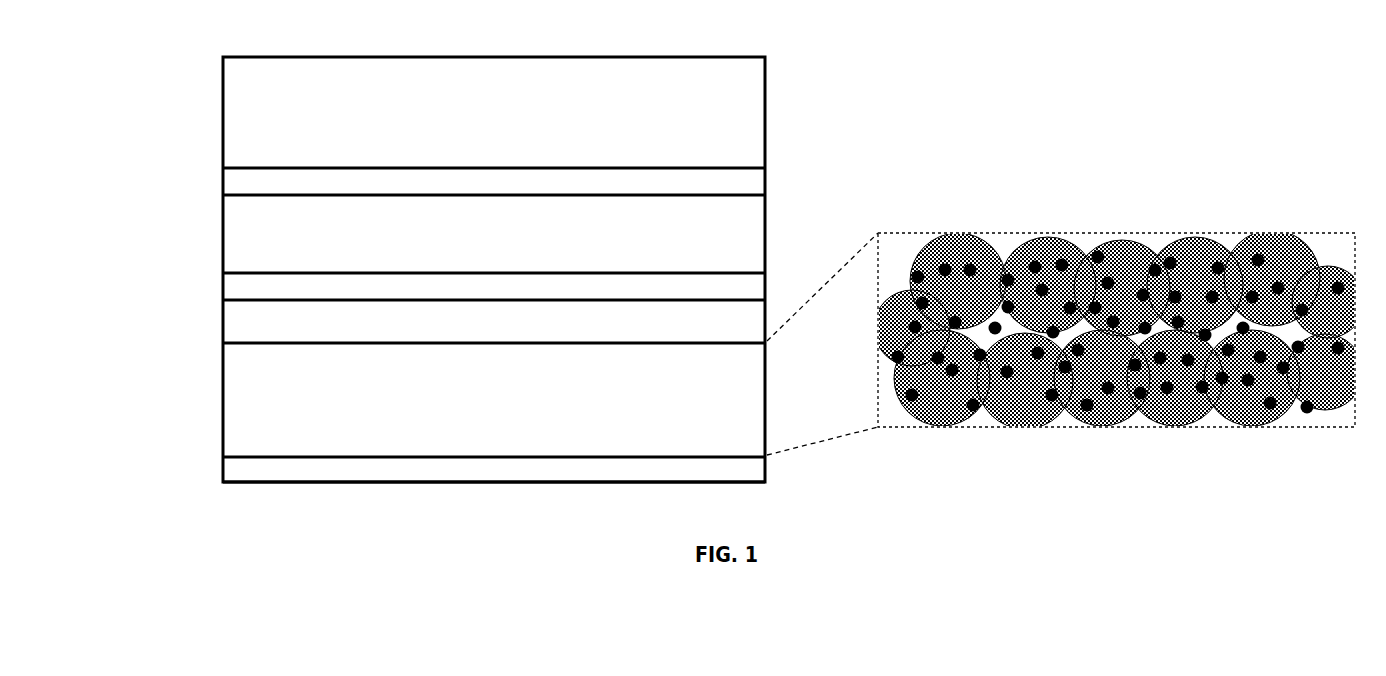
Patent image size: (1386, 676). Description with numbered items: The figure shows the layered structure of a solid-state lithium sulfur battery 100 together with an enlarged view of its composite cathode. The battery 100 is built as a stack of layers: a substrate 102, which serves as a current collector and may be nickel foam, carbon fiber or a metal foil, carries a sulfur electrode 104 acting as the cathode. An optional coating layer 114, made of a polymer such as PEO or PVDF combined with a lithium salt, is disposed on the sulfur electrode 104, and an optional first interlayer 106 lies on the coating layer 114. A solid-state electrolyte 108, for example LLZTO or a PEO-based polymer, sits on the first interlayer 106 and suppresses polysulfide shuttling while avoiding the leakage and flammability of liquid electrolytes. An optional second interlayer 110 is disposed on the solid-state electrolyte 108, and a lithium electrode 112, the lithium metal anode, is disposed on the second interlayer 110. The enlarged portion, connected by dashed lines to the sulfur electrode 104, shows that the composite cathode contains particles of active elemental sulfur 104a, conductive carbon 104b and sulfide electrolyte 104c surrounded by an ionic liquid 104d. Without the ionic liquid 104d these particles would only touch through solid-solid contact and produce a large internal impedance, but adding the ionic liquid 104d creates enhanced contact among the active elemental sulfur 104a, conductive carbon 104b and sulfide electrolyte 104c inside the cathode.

The battery 100 is at (812, 137).
The substrate 102 is at (223, 473).
The sulfur electrode 104 is at (223, 410).
The active elemental sulfur 104a is at (1287, 253).
The conductive carbon 104b is at (1145, 404).
The sulfide electrolyte 104c is at (1017, 405).
The ionic liquid 104d is at (1082, 250).
The first interlayer 106 is at (223, 290).
The solid-state electrolyte 108 is at (223, 243).
The second interlayer 110 is at (223, 185).
The lithium electrode 112 is at (223, 125).
The coating layer 114 is at (223, 330).